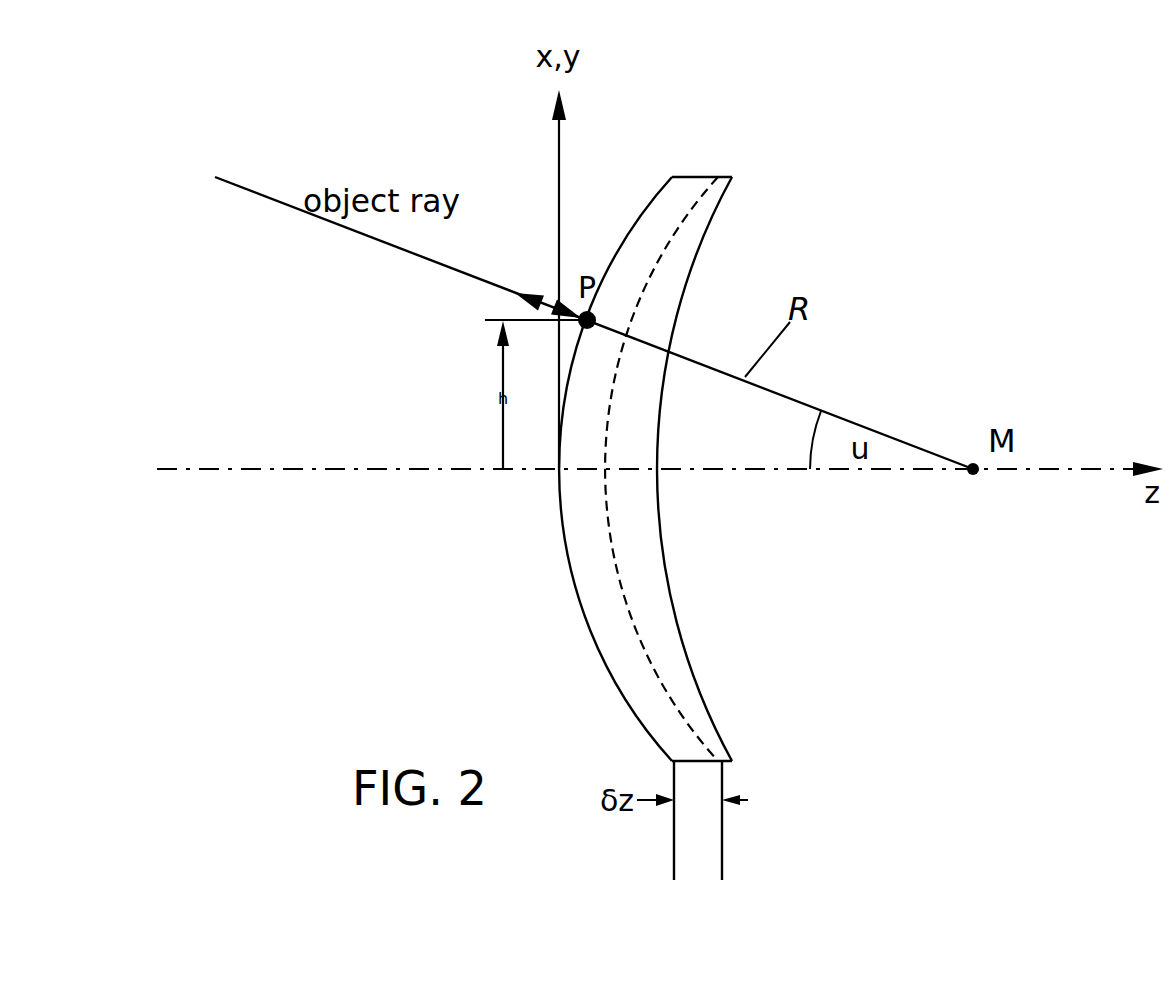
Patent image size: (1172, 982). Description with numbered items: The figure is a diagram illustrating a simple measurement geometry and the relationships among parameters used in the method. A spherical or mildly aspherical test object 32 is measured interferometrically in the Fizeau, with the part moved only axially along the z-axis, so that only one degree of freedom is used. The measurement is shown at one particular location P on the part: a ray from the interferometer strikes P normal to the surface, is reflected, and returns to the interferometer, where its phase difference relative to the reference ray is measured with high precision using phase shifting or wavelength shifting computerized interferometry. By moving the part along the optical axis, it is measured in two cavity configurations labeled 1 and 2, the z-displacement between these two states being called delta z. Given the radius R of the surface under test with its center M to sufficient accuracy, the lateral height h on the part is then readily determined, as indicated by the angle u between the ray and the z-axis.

The test object 32 is at (593, 572).
The first cavity configuration 1 is at (622, 449).
The second cavity configuration 2 is at (696, 449).